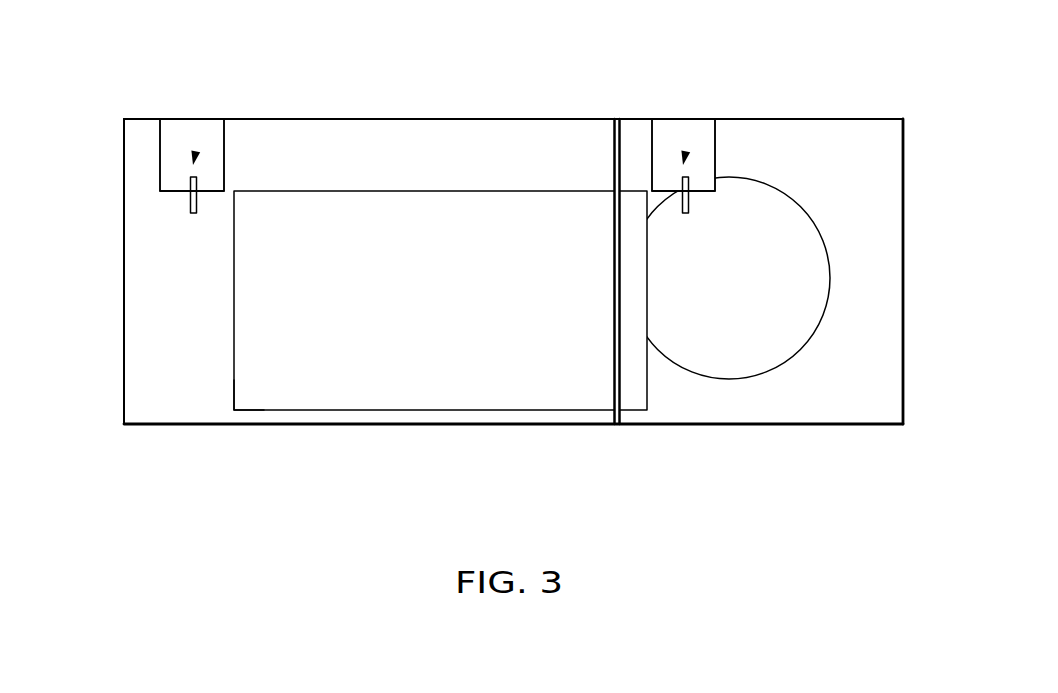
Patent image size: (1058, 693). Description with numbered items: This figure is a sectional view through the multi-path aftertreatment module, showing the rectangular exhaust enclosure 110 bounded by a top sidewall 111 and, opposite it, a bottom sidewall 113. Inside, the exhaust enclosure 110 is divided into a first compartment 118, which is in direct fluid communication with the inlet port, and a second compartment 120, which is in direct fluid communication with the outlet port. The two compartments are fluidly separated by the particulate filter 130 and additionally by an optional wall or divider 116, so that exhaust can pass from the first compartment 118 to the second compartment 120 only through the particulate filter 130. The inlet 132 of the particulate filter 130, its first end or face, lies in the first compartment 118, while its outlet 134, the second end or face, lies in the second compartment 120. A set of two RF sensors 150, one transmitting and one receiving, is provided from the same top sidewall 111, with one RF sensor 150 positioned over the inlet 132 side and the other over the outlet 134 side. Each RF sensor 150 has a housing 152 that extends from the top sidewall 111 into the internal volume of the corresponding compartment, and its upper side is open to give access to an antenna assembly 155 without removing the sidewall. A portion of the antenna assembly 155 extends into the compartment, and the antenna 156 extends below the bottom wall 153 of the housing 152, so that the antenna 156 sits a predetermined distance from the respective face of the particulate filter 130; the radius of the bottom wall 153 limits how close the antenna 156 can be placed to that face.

The exhaust enclosure 110 is at (122, 297).
The top sidewall 111 is at (130, 118).
The bottom sidewall 113 is at (143, 427).
The divider 116 is at (613, 148).
The first compartment 118 is at (876, 365).
The second compartment 120 is at (145, 349).
The particulate filter 130 is at (403, 402).
The inlet 132 is at (647, 397).
The outlet 134 is at (231, 396).
The RF sensor 150 is at (181, 98).
The housing 152 is at (160, 160).
The bottom wall 153 is at (168, 192).
The antenna assembly 155 is at (195, 150).
The antenna 156 is at (190, 205).